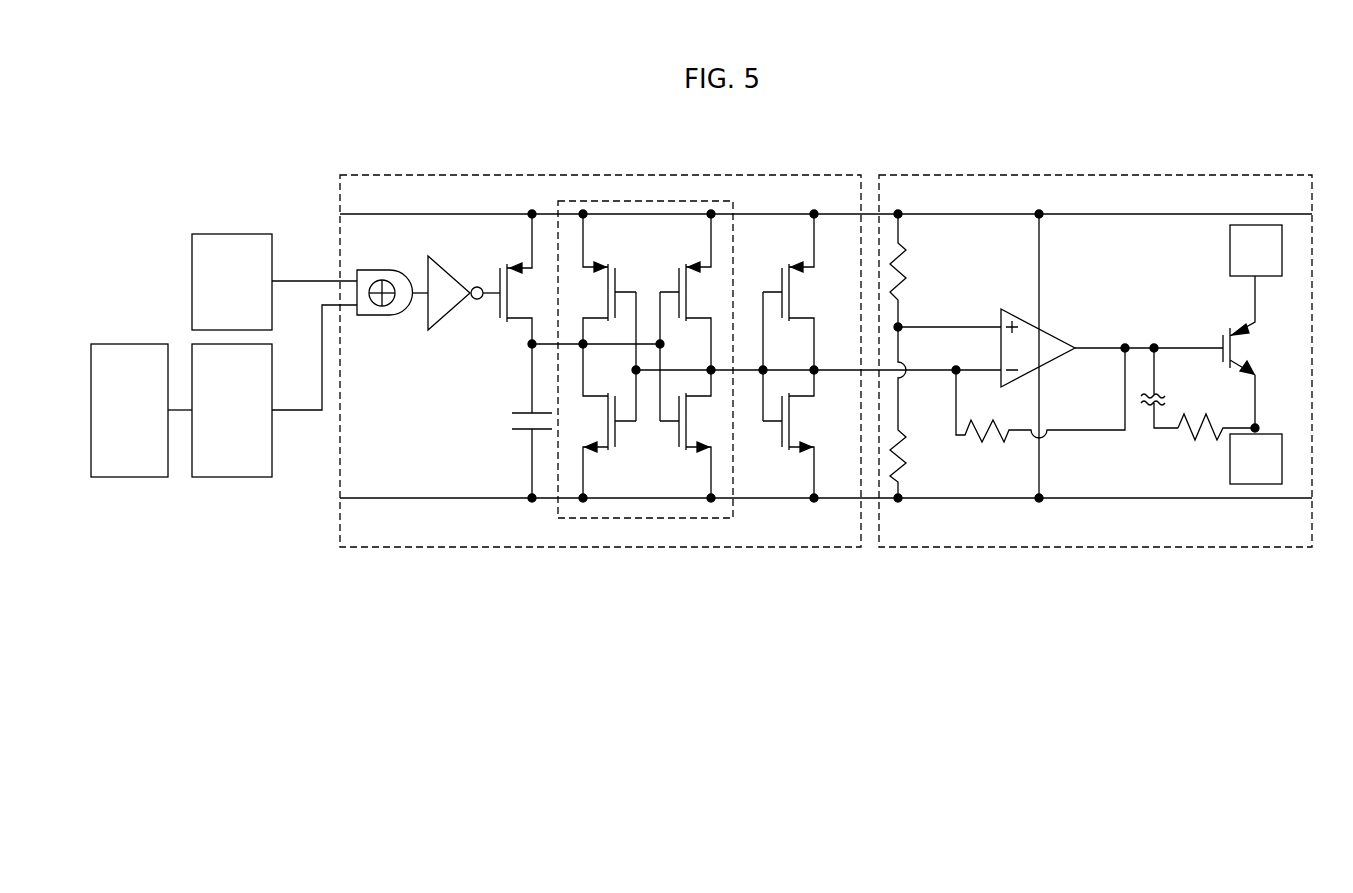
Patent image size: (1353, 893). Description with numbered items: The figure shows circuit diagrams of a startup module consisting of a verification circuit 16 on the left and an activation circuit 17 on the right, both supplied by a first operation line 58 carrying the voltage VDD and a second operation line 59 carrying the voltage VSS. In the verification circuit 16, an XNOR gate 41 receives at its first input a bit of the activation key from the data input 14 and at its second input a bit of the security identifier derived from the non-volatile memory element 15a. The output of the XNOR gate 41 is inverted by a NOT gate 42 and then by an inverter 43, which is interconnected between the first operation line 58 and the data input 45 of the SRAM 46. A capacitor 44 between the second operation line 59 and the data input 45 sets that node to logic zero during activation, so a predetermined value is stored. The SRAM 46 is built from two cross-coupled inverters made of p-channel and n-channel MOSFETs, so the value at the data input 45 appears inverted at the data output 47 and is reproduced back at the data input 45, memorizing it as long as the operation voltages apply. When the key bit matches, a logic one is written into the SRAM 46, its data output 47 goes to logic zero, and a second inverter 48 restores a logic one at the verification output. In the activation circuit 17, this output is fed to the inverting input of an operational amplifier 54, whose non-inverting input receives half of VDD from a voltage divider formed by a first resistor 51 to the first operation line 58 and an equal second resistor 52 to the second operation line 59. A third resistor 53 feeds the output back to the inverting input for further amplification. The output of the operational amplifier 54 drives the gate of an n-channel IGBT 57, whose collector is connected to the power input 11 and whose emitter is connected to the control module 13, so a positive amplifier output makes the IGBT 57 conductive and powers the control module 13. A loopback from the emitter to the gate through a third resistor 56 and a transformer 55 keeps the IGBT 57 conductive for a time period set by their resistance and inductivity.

The data input 14 is at (274, 282).
The non-volatile memory element 15a is at (224, 391).
The verification circuit 16 is at (668, 175).
The activation circuit 17 is at (1086, 175).
The XNOR gate 41 is at (382, 316).
The NOT gate 42 is at (428, 268).
The inverter 43 is at (498, 276).
The capacitor 44 is at (512, 430).
The data input 45 is at (529, 344).
The SRAM 46 is at (610, 201).
The data output 47 is at (711, 382).
The second inverter 48 is at (800, 318).
The first resistor 51 is at (906, 272).
The second resistor 52 is at (906, 462).
The third resistor 53 is at (990, 441).
The operational amplifier 54 is at (1050, 332).
The transformer 55 is at (1148, 405).
The third resistor 56 is at (1198, 426).
The IGBT 57 is at (1238, 348).
The first operation line 58 is at (1162, 214).
The second operation line 59 is at (1094, 498).
The power input 11 is at (1256, 250).
The control module 13 is at (1256, 459).